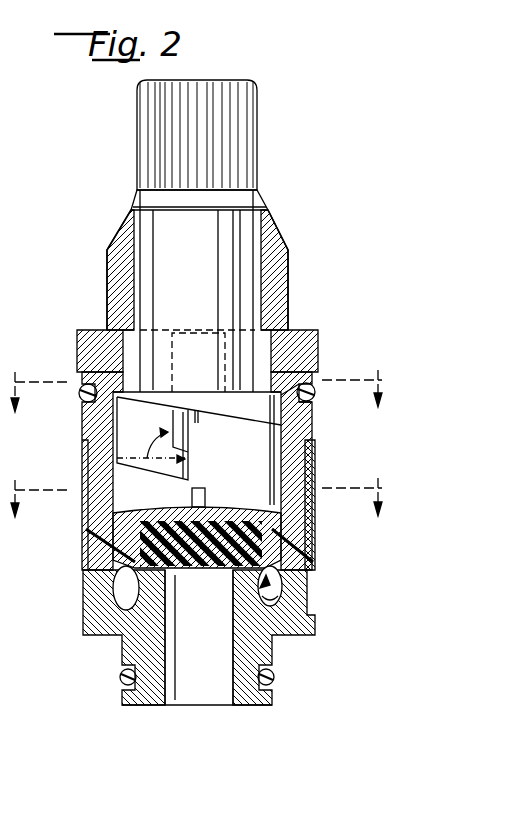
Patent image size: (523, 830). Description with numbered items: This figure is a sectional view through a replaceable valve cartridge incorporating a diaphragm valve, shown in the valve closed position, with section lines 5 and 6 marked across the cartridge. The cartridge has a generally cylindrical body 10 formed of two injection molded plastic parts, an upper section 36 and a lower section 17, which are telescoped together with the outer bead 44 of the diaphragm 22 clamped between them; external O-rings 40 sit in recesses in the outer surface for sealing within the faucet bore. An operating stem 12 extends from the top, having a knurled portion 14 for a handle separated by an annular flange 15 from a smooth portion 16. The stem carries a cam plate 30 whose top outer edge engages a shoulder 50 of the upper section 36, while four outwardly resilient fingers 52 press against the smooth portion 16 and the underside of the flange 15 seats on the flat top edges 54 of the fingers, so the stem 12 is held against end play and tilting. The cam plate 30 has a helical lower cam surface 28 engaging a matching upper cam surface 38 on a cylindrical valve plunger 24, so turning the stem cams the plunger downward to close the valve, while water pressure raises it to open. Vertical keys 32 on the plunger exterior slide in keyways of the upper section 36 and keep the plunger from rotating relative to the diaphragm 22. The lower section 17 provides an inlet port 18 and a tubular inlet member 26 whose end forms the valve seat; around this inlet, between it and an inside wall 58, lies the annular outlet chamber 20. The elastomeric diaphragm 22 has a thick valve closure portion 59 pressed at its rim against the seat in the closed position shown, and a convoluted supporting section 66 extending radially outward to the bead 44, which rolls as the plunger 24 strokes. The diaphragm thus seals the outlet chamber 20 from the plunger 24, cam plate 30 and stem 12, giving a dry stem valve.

The body 10 is at (318, 527).
The operating stem 12 is at (240, 194).
The knurled portion 14 is at (147, 125).
The annular flange 15 is at (158, 192).
The smooth portion 16 is at (245, 252).
The lower section 17 is at (110, 628).
The inlet port 18 is at (233, 687).
The outlet chamber 20 is at (280, 590).
The diaphragm 22 is at (180, 510).
The valve plunger 24 is at (120, 486).
The tubular inlet member 26 is at (150, 590).
The lower cam surface 28 is at (158, 408).
The cam plate 30 is at (311, 416).
The keys 32 is at (201, 489).
The upper section 36 is at (110, 428).
The upper cam surface 38 is at (218, 408).
The O-rings 40 is at (80, 397).
The outer bead 44 is at (90, 540).
The shoulder 50 is at (318, 345).
The resilient fingers 52 is at (108, 250).
The flat top edges 54 is at (132, 205).
The inside wall 58 is at (282, 580).
The valve closure portion 59 is at (115, 566).
The convoluted supporting section 66 is at (270, 570).
The section line 5- 5 is at (196, 377).
The section line 6- 6 is at (196, 488).